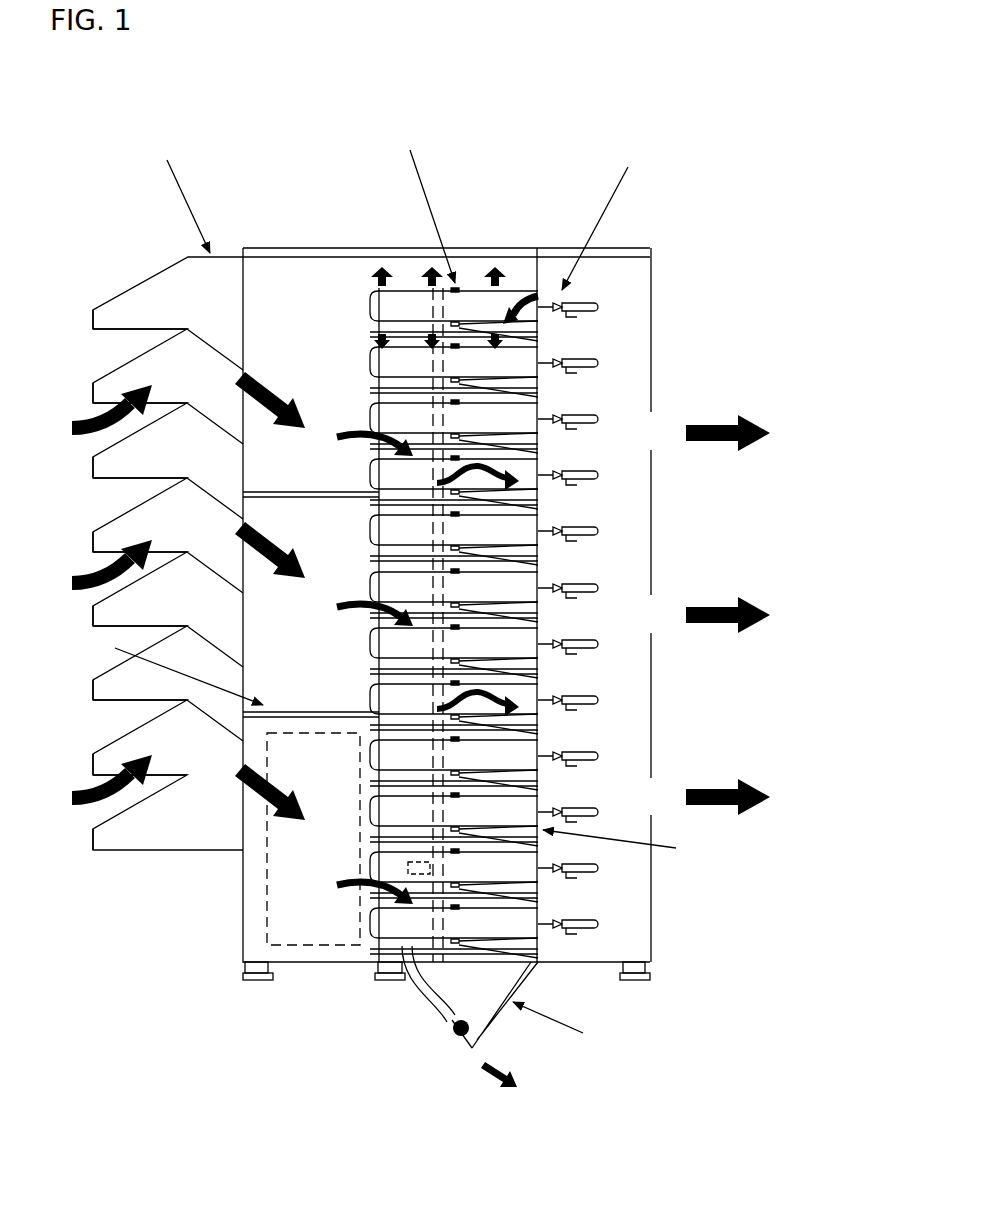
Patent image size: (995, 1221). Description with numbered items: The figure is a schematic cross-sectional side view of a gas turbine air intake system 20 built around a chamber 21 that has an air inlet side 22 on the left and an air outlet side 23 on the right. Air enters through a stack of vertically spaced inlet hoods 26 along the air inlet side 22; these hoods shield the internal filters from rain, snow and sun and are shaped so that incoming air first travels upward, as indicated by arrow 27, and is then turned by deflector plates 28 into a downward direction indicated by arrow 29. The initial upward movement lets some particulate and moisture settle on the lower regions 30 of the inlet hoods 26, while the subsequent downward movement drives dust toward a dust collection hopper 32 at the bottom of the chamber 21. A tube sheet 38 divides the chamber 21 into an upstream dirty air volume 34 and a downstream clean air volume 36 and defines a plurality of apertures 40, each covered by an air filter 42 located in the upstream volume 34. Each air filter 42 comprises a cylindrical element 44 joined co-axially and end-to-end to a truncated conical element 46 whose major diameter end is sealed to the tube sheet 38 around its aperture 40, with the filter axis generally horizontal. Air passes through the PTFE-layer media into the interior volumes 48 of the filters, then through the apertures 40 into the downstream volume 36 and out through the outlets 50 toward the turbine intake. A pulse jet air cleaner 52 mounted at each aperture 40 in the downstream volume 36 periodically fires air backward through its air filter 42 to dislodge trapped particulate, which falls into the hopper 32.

The gas turbine air intake system 20 is at (547, 157).
The chamber 21 is at (322, 247).
The air inlet side 22 is at (115, 290).
The air outlet side 23 is at (653, 350).
The inlet hoods 26 is at (92, 387).
The arrow (upward air direction) 27 is at (67, 420).
The deflector plates 28 is at (210, 343).
The arrow (downward air direction) 29 is at (275, 393).
The lower regions of the inlet hoods 30 is at (100, 450).
The dust collection hopper 32 is at (480, 1027).
The upstream volume 34 is at (306, 334).
The downstream volume 36 is at (631, 345).
The tube sheet 38 is at (537, 265).
The apertures 40 is at (540, 405).
The air filter 42 is at (372, 292).
The cylindrical element 44 is at (405, 288).
The truncated conical element 46 is at (473, 288).
The interior volumes 48 is at (421, 486).
The clean air outlet 50 is at (652, 410).
The pulse jet air cleaner 52 is at (590, 468).